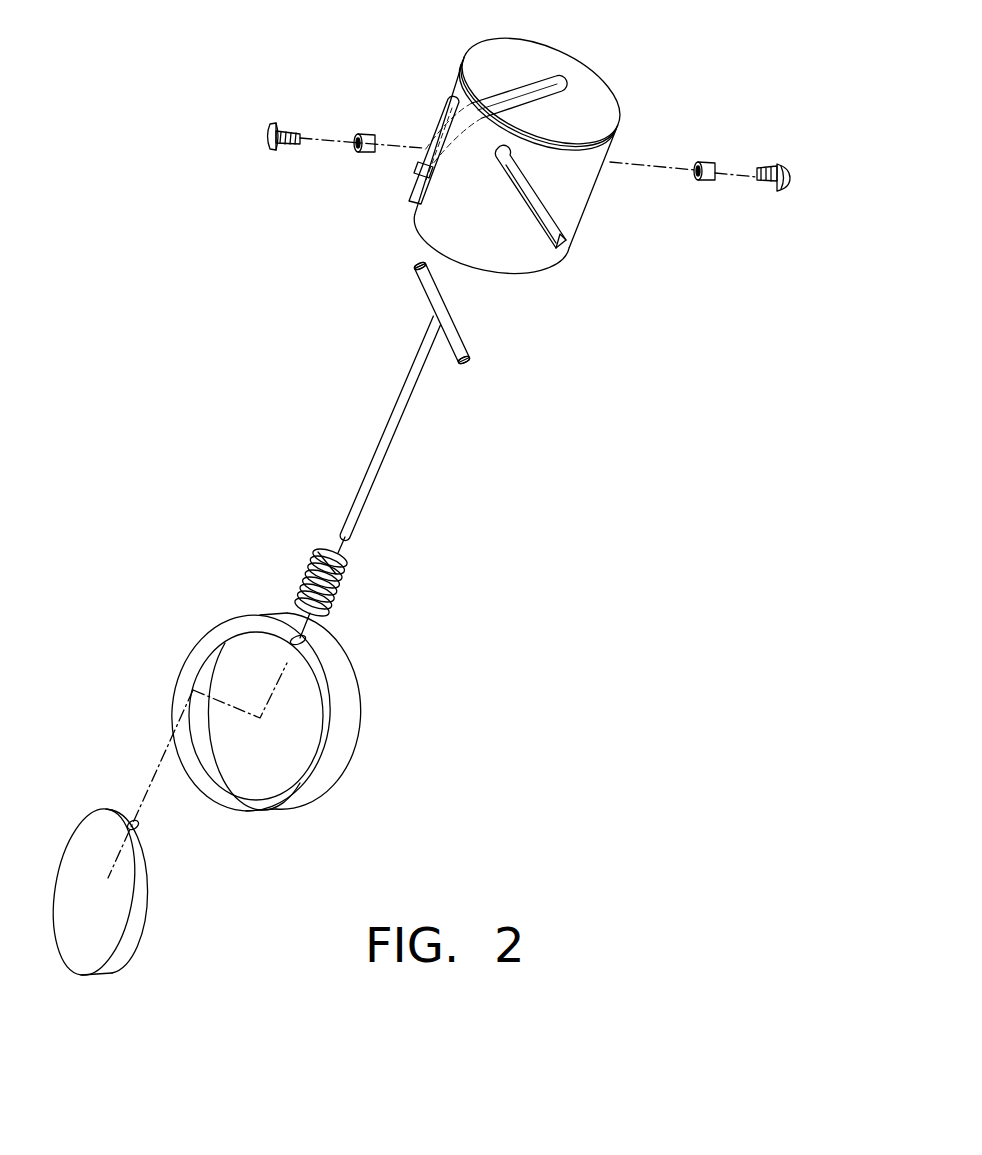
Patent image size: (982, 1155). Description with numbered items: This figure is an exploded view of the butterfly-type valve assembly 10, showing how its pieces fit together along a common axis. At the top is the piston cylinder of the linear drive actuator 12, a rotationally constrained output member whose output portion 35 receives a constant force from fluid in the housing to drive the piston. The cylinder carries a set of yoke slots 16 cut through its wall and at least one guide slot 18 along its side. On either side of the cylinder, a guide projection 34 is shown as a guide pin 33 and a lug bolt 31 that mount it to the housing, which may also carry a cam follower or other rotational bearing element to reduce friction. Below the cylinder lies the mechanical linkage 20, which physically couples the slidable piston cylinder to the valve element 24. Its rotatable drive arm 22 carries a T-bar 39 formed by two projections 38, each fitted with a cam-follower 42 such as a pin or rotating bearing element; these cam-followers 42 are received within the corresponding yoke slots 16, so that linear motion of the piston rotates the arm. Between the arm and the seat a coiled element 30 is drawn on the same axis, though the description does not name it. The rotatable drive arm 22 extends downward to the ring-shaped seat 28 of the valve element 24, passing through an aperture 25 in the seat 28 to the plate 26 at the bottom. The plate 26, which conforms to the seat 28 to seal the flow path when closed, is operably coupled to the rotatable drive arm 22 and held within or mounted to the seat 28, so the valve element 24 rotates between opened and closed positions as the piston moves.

The valve assembly 10 is at (714, 105).
The linear drive actuator 12 is at (459, 58).
The yoke slots 16 is at (522, 88).
The guide slot 18 is at (455, 108).
The mechanical linkage 20 is at (373, 423).
The rotatable drive arm 22 is at (378, 481).
The valve element 24 is at (200, 622).
The aperture 25 is at (304, 641).
The plate 26 is at (110, 911).
The seat 28 is at (344, 708).
The spring 30 is at (337, 589).
The lug bolt 31 is at (290, 126).
The guide pin 33 is at (365, 133).
The guide projection 34 is at (316, 96).
The output portion 35 is at (592, 91).
The projection 38 is at (428, 268).
The T-bar 39 is at (483, 322).
The cam-followers 42 is at (418, 264).